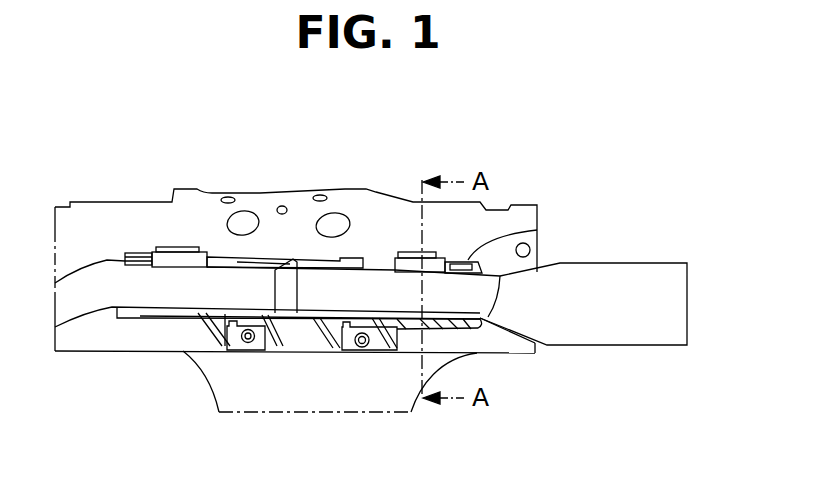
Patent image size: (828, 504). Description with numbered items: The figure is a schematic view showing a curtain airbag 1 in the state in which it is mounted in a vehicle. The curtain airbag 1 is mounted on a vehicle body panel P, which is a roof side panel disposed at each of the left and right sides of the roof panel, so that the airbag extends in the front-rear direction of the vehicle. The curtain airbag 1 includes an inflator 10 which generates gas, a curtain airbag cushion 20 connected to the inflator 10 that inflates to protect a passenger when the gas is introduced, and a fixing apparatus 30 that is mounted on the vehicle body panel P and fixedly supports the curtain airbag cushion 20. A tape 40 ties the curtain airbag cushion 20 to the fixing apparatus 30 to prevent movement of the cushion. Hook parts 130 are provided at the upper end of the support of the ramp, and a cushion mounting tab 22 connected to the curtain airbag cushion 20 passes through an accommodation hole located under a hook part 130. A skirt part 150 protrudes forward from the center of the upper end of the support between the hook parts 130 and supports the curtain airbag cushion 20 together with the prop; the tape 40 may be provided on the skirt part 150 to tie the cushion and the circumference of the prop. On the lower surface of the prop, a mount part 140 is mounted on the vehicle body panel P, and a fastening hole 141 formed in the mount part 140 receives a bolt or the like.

The curtain airbag 1 is at (112, 256).
The inflator 10 is at (640, 287).
The curtain airbag cushion 20 is at (141, 292).
The cushion mounting tab 22 is at (537, 230).
The fixing apparatus 30 is at (479, 329).
The tape 40 is at (290, 293).
The hook part 130 is at (183, 247).
The mount part 140 is at (372, 350).
The fastening hole 141 is at (362, 348).
The skirt part 150 is at (270, 263).
The vehicle body panel P is at (320, 196).